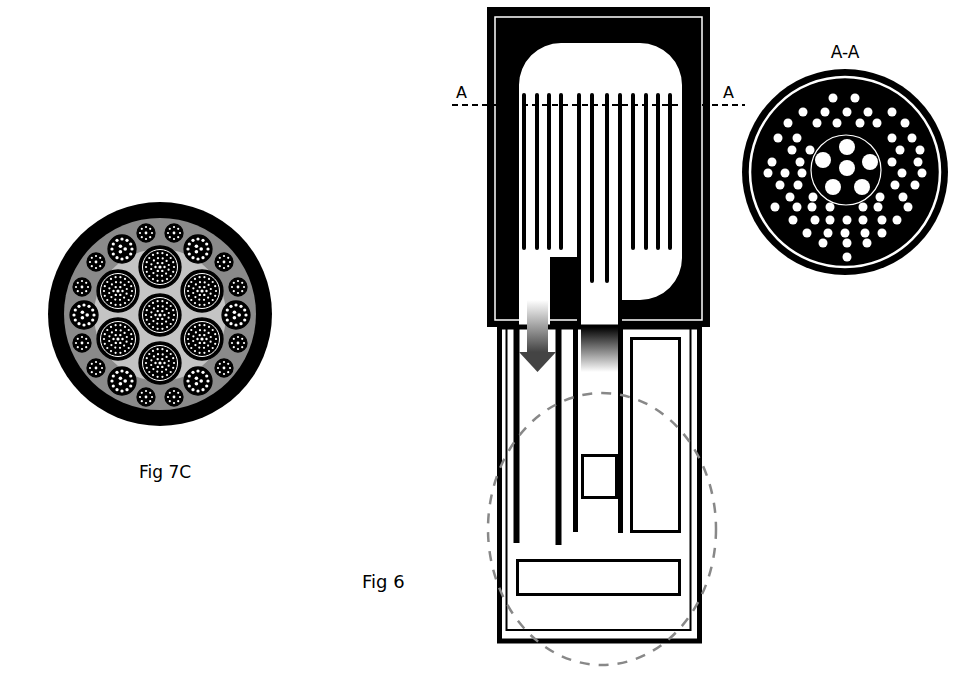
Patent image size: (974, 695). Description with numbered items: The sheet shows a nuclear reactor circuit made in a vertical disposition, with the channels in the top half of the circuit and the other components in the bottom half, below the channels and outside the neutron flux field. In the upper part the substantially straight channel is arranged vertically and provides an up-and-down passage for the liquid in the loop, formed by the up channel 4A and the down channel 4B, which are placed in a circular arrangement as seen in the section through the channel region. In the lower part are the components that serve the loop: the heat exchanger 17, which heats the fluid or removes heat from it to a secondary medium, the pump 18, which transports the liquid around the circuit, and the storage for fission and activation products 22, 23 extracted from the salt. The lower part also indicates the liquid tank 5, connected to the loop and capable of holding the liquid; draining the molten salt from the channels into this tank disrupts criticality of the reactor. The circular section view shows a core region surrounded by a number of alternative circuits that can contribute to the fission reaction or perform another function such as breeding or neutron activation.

The up channel 4A is at (524, 139).
The down channel 4B is at (589, 210).
The heat exchanger 17 is at (599, 578).
The pump 18 is at (600, 477).
The fission and activation products 22 is at (656, 435).
The fission and activation products 23 is at (656, 435).
The liquid tank 5 is at (716, 531).